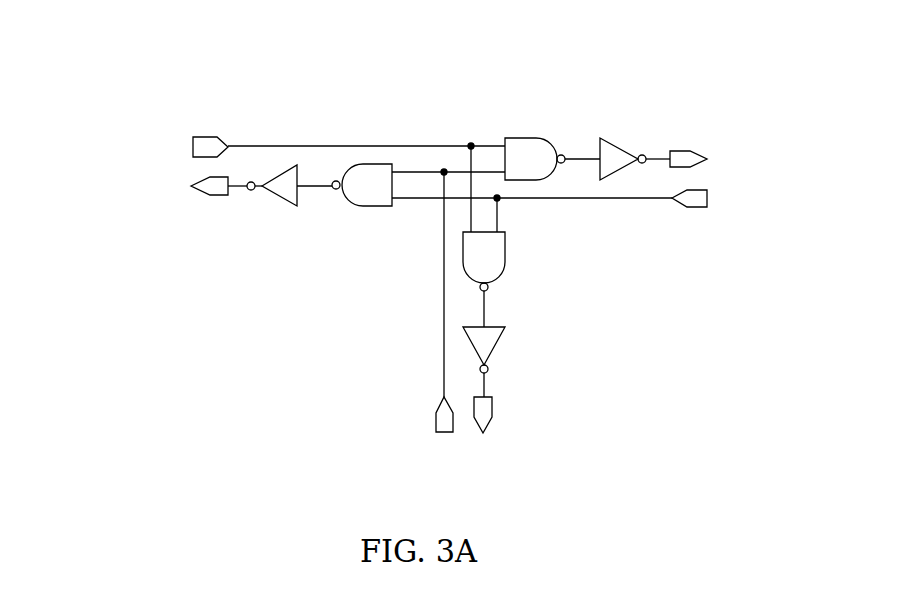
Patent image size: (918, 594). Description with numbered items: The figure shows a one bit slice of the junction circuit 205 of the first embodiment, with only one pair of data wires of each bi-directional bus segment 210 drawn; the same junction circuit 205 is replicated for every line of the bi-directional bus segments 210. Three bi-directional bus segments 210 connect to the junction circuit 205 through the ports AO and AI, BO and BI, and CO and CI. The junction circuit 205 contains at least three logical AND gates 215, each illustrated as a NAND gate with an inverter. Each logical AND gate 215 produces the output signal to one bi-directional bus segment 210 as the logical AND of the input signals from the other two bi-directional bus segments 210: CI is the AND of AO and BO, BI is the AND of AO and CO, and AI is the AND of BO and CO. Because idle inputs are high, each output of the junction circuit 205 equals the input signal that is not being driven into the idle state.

The junction circuit 205 is at (331, 43).
The bi-directional bus segment 210 is at (172, 167).
The logical AND gate 215 is at (582, 126).